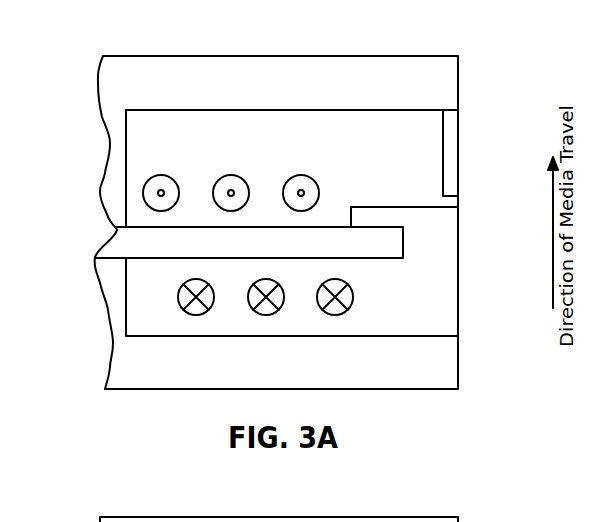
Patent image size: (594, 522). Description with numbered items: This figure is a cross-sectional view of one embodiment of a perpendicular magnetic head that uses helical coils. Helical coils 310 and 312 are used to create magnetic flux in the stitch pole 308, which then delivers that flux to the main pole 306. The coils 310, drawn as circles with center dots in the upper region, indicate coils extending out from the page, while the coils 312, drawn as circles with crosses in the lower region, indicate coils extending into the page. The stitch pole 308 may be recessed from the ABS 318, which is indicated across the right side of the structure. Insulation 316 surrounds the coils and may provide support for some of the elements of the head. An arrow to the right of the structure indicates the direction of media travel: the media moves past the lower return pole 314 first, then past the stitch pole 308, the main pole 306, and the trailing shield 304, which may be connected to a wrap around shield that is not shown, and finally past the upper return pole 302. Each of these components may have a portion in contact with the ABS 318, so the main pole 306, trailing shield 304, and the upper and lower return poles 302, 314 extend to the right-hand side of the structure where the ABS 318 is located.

The upper return pole 302 is at (363, 93).
The trailing shield 304 is at (458, 155).
The main pole 306 is at (458, 210).
The stitch pole 308 is at (310, 255).
The helical coils 310 is at (158, 176).
The helical coils 312 is at (178, 302).
The lower return pole 314 is at (310, 375).
The insulation 316 is at (403, 165).
The ABS 318 is at (458, 76).